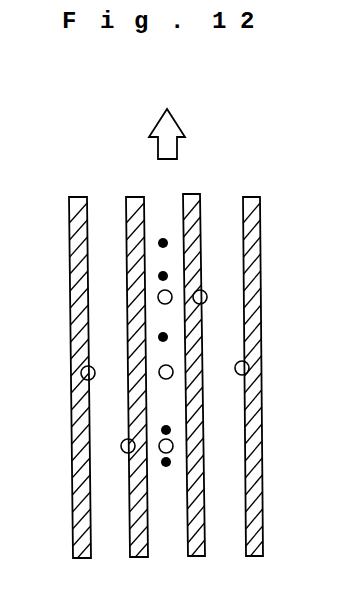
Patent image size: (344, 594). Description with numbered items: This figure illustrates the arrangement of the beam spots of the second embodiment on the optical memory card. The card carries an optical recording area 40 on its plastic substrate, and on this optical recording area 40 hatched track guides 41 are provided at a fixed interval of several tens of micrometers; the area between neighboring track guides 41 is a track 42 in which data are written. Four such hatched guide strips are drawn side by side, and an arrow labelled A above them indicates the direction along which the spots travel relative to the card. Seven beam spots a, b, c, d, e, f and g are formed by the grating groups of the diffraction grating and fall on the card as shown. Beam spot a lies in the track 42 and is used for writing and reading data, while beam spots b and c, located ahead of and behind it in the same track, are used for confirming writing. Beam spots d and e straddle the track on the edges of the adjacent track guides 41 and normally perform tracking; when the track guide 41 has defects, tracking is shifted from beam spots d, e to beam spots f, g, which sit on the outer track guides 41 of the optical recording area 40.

The optical recording area 40 is at (211, 178).
The track guide 41 is at (69, 250).
The track 42 is at (220, 227).
The ink feed direction A is at (176, 134).
The beam spot a is at (169, 380).
The beam spot b is at (160, 305).
The beam spot c is at (171, 450).
The beam spot d is at (204, 305).
The beam spot e is at (123, 450).
The beam spot f is at (92, 379).
The beam spot g is at (237, 376).